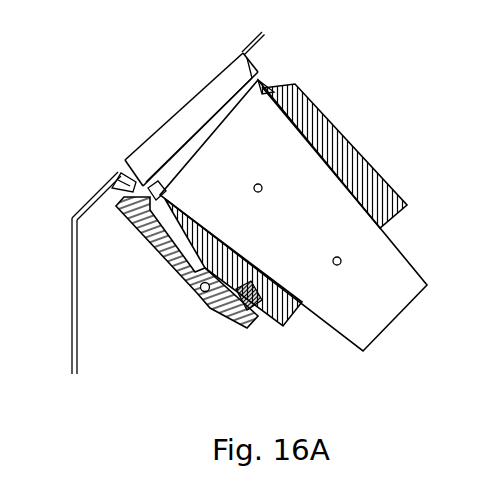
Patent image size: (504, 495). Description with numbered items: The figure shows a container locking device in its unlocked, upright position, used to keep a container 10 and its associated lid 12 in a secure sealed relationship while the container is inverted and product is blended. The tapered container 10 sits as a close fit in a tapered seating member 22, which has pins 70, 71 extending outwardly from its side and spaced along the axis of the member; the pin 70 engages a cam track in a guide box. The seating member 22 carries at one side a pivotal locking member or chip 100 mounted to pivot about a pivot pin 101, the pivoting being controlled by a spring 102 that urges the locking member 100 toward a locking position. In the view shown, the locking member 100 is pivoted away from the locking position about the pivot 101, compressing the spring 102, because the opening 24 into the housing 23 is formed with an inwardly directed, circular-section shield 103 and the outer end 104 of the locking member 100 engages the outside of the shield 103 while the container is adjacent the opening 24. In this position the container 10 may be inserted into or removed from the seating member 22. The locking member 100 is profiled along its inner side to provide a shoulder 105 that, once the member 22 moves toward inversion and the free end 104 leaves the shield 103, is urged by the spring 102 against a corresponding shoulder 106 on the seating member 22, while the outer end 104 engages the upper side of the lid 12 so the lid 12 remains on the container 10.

The container 10 is at (396, 304).
The lid 12 is at (223, 115).
The seating member 22 is at (374, 172).
The housing 23 is at (78, 328).
The opening 24 is at (135, 130).
The pin 70 is at (261, 192).
The pin 71 is at (339, 265).
The locking member 100 is at (147, 252).
The pivot pin 101 is at (203, 300).
The spring 102 is at (250, 317).
The shield 103 is at (257, 65).
The outer end 104 is at (113, 186).
The shoulder 105 is at (160, 205).
The shoulder 106 is at (266, 90).